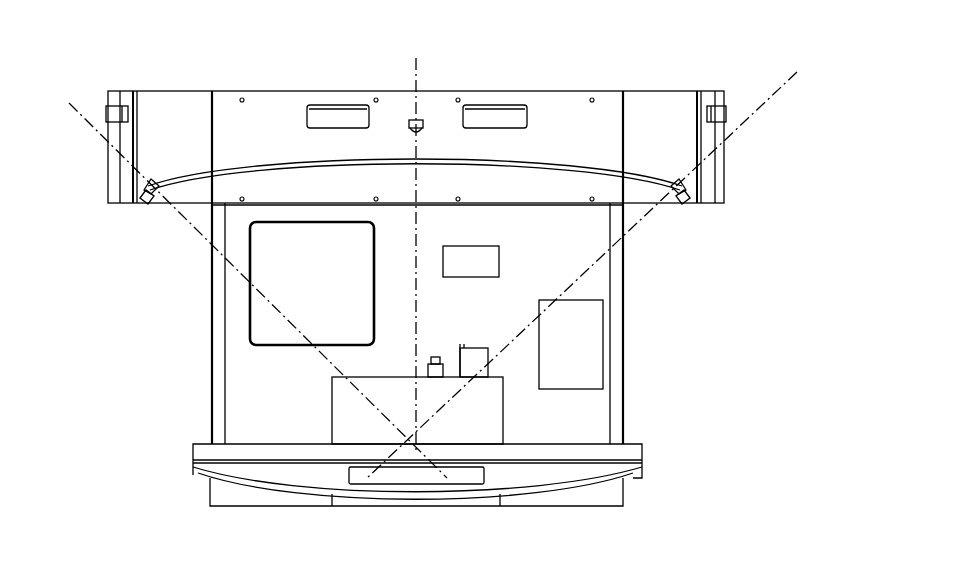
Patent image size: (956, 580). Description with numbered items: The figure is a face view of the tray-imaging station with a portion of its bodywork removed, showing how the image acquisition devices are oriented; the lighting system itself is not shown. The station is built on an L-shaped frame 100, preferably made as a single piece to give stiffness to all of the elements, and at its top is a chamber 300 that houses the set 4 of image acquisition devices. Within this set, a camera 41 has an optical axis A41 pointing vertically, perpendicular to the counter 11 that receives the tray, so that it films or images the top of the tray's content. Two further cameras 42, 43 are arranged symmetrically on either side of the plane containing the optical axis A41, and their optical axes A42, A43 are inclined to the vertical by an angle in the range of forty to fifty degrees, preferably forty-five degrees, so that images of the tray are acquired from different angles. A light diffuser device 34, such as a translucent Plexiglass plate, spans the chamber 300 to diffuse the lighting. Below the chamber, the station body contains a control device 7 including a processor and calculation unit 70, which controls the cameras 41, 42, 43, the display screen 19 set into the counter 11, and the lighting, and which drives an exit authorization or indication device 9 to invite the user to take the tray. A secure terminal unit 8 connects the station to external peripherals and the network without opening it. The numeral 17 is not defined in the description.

The frame 100 is at (205, 382).
The chamber 300 is at (713, 67).
The set of image acquisition devices 4 is at (558, 77).
The control device 7 is at (216, 297).
The secure terminal unit 8 is at (447, 355).
The exit authorization or indication device 9 is at (118, 108).
The counter 11 is at (617, 448).
The sheet number 17 is at (732, 574).
The display screen 19 is at (410, 472).
The light diffuser device 34 is at (517, 153).
The camera 41 is at (428, 124).
The camera 42 is at (148, 188).
The camera 43 is at (697, 192).
The processor and calculation unit 70 is at (312, 283).
The optical axis A41 is at (417, 272).
The optical axis A42 is at (103, 138).
The optical axis A43 is at (645, 228).